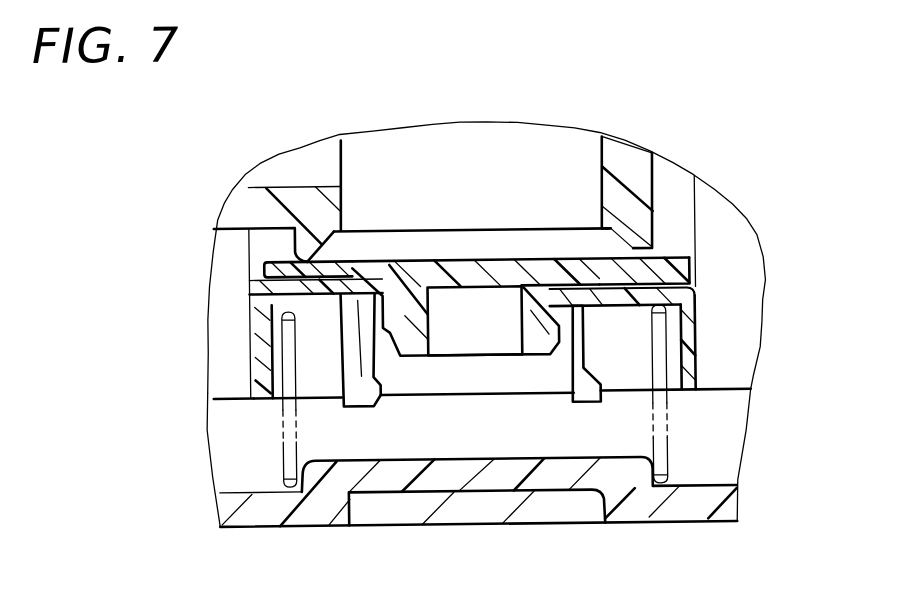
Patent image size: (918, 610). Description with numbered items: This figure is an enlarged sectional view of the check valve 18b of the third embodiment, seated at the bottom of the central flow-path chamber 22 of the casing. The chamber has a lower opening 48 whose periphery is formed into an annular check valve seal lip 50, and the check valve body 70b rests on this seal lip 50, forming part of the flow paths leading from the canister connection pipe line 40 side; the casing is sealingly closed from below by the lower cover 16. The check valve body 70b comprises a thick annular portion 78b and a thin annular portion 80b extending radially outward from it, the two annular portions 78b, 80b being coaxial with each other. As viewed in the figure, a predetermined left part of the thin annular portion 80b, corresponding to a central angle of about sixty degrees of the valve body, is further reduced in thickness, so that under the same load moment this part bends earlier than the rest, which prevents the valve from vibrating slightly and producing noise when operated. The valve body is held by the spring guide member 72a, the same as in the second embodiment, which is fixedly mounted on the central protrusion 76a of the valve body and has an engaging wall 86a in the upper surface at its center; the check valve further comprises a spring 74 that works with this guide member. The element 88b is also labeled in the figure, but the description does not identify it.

The central flow-path chamber 22 is at (373, 149).
The lower opening 48 is at (432, 257).
The check valve 18b is at (510, 246).
The thick annular portion 78b is at (383, 270).
The canister connection pipe line 40 is at (297, 198).
The check valve seal lip 50 is at (307, 250).
The thin annular portion 80b is at (273, 265).
The engaging wall 86a is at (397, 312).
The central protrusion 76a is at (540, 306).
The check valve body 70b is at (497, 358).
The leg 88b is at (350, 282).
The lower cover 16 is at (623, 505).
The spring 74 is at (662, 410).
The spring guide member 72a is at (688, 397).